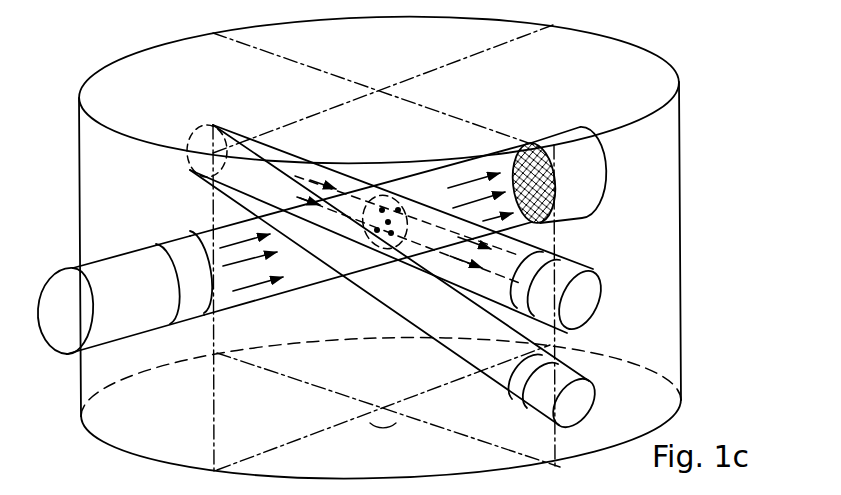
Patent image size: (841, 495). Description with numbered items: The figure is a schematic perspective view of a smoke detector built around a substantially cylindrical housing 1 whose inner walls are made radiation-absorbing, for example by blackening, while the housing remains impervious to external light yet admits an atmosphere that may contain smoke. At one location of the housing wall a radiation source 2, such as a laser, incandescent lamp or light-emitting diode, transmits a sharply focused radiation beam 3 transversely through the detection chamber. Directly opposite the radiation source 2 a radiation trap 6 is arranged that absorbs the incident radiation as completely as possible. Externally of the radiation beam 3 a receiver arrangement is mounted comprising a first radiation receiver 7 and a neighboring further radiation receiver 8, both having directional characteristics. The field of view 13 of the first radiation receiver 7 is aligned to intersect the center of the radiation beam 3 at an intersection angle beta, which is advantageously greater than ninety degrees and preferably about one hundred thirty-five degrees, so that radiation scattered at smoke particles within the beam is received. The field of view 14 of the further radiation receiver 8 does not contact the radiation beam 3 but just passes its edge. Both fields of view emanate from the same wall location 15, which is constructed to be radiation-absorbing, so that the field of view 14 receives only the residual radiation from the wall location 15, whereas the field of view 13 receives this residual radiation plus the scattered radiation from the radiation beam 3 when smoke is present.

The housing 1 is at (662, 212).
The radiation source 2 is at (125, 292).
The radiation beam 3 is at (361, 229).
The radiation trap 6 is at (557, 176).
The first radiation receiver 7 is at (560, 294).
The further radiation receiver 8 is at (556, 394).
The field of view 13 is at (391, 229).
The field of view 14 is at (389, 275).
The wall location 15 is at (213, 125).